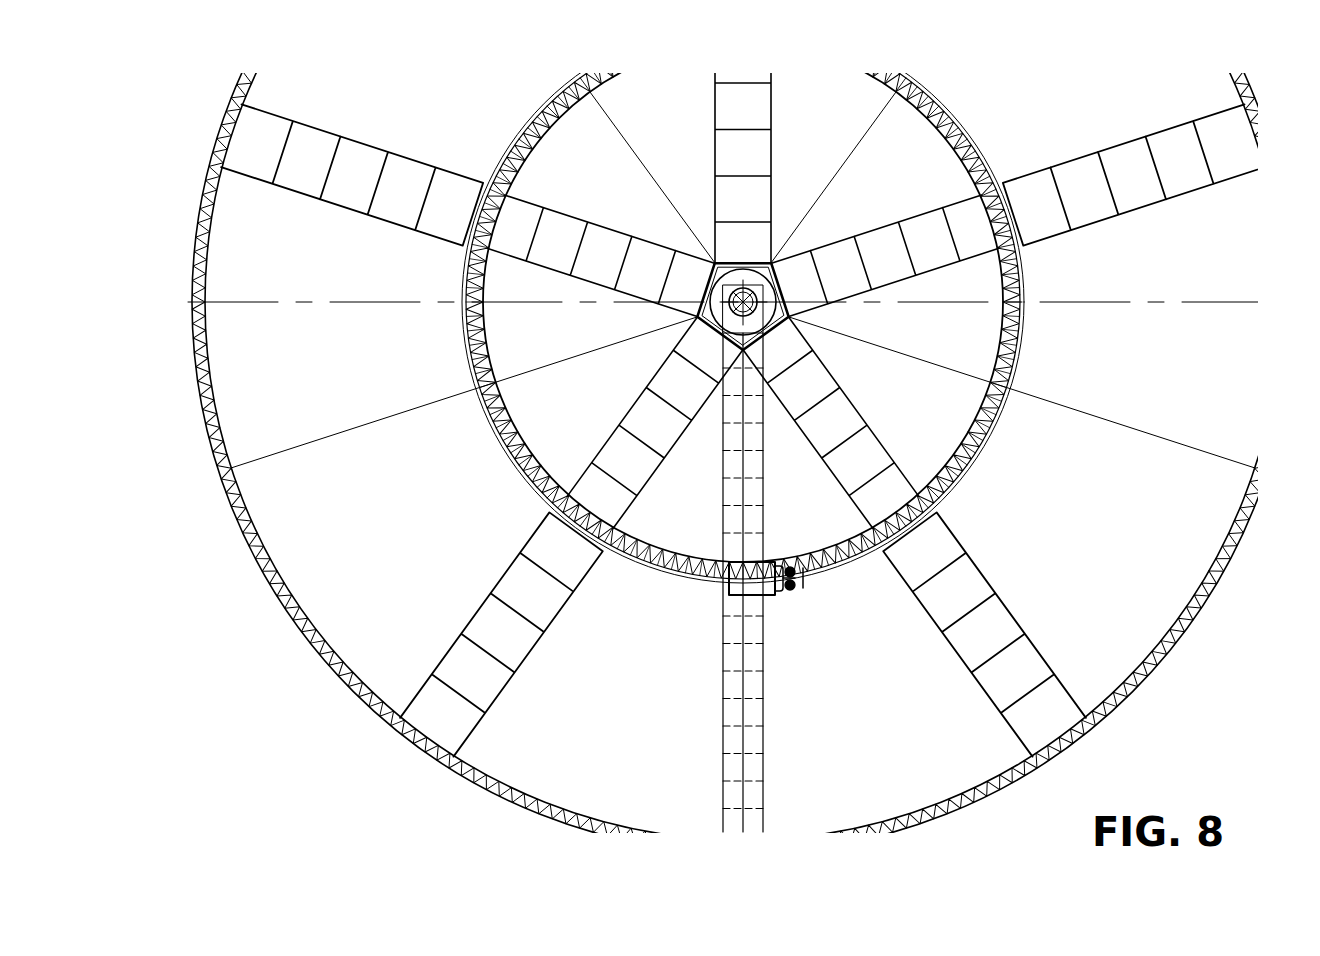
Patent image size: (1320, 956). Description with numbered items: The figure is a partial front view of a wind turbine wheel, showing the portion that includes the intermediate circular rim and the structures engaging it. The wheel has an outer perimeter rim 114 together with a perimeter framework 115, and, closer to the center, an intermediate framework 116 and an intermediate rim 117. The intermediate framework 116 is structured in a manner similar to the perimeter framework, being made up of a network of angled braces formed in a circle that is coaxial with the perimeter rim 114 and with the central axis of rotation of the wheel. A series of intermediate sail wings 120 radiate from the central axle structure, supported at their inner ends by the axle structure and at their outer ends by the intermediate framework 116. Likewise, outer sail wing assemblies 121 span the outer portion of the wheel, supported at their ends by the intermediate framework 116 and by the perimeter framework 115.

The perimeter rim 114 is at (1222, 576).
The perimeter framework 115 is at (1233, 556).
The intermediate framework 116 is at (982, 453).
The intermediate rim 117 is at (956, 455).
The intermediate sail wings 120 is at (907, 225).
The outer sail wing assemblies 121 is at (1170, 193).